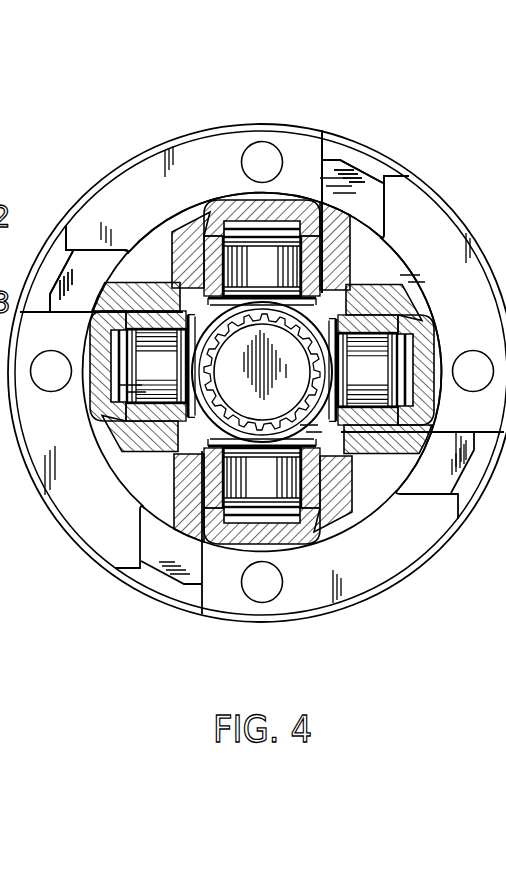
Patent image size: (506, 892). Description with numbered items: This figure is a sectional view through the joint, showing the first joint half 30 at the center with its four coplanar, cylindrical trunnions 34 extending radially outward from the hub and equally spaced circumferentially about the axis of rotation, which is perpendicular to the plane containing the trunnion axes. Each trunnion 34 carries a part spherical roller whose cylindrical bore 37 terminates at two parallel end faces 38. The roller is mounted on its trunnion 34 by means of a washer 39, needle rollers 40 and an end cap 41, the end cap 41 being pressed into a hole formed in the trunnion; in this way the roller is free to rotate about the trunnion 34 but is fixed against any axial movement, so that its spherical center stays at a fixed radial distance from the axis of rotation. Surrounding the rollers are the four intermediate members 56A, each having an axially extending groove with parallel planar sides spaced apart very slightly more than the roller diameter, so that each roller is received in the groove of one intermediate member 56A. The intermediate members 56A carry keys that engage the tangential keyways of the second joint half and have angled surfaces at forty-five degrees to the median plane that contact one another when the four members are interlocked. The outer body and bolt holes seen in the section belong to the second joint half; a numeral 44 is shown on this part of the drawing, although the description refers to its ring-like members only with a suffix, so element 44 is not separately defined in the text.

The first joint half 30 is at (330, 437).
The trunnions 34 is at (272, 485).
The cylindrical bore 37 is at (162, 262).
The end faces 38 is at (240, 233).
The washer 39 is at (250, 293).
The needle rollers 40 is at (297, 265).
The end cap 41 is at (283, 233).
The housing body 44 is at (440, 228).
The intermediate member 56A is at (96, 262).